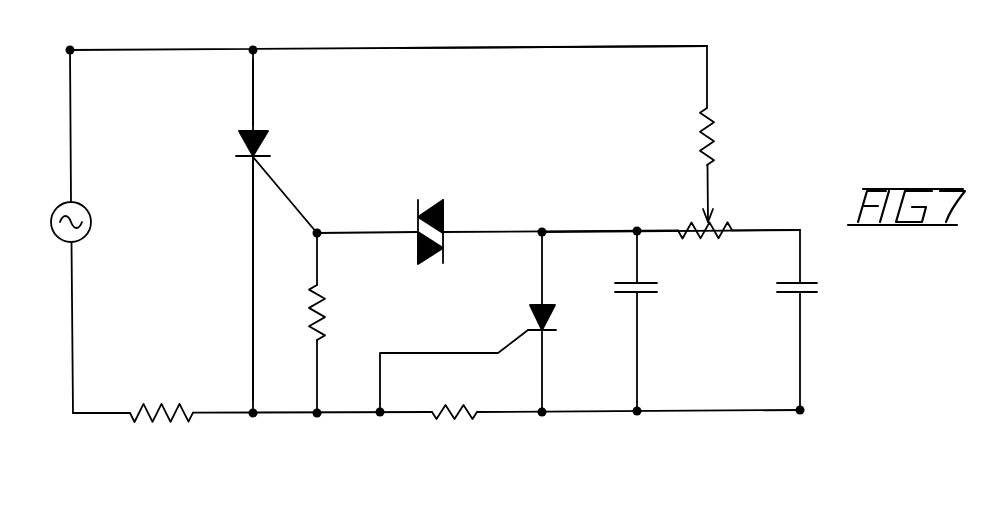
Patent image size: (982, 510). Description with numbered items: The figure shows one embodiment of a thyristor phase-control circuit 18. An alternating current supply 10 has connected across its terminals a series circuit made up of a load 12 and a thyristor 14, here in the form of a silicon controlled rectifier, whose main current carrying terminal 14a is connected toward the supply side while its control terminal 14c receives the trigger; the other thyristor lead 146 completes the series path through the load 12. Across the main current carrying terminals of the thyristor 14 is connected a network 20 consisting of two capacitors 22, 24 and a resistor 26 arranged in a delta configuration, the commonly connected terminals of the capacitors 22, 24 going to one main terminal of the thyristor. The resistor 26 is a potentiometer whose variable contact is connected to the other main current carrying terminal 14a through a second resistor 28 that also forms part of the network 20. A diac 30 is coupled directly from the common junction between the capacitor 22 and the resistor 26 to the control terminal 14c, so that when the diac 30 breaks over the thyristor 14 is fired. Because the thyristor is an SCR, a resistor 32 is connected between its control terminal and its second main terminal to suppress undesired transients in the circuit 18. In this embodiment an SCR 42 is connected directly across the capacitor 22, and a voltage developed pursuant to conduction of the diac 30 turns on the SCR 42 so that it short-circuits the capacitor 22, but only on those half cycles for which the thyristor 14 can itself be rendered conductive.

The alternating current supply 10 is at (92, 222).
The load 12 is at (162, 413).
The thyristor 14 is at (243, 128).
The main current carrying terminal 14a is at (254, 90).
The control terminal 14c is at (292, 197).
The diode lead 146 is at (256, 242).
The circuit 18 is at (602, 43).
The network 20 is at (615, 155).
The capacitor 22 is at (640, 293).
The capacitor 24 is at (802, 293).
The resistor 26 is at (729, 202).
The second resistor 28 is at (718, 132).
The diac 30 is at (445, 218).
The resistor 32 is at (322, 315).
The SCR 42 is at (528, 316).